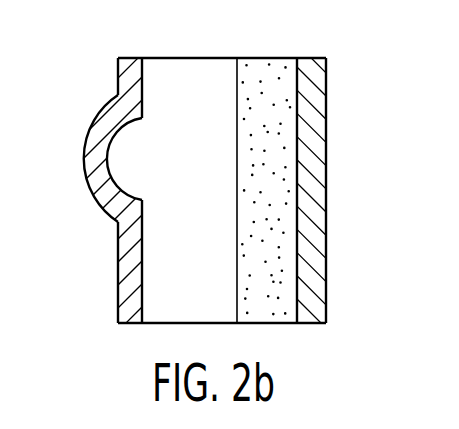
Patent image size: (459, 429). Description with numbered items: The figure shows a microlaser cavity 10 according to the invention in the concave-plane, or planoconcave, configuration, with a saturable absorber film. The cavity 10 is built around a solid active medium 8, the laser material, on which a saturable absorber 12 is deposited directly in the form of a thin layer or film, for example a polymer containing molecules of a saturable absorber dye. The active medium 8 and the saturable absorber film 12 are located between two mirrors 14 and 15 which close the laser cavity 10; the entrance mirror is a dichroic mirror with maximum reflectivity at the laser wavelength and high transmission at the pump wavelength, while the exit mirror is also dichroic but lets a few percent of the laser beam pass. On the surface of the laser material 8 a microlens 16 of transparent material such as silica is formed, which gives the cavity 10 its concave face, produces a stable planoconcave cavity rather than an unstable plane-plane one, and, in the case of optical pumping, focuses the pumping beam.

The active medium 8 is at (170, 67).
The cavity 10 is at (104, 258).
The saturable absorber film 12 is at (252, 70).
The mirror 14 is at (116, 89).
The mirror 15 is at (327, 102).
The microlens 16 is at (82, 163).